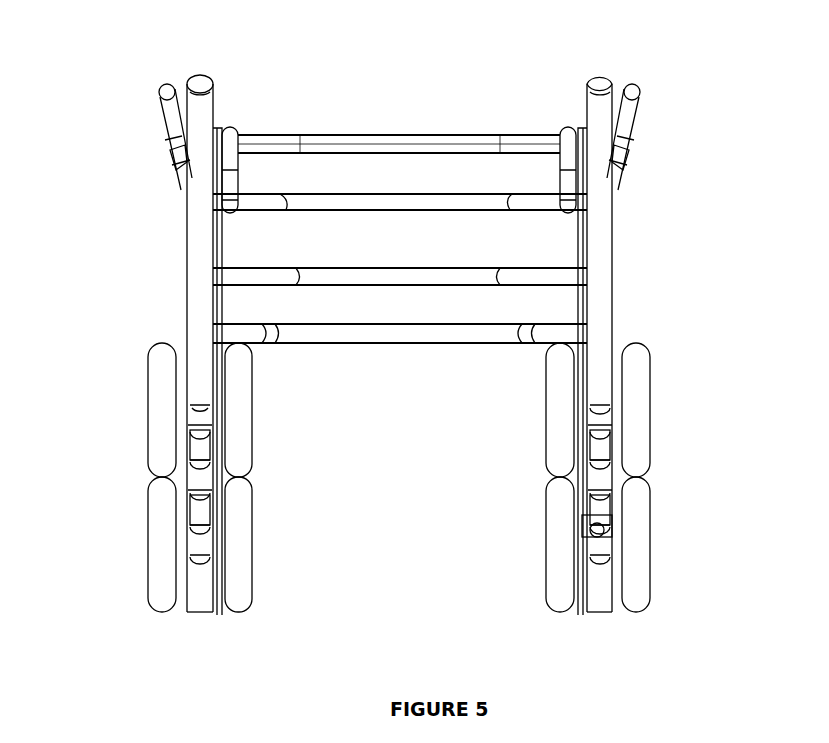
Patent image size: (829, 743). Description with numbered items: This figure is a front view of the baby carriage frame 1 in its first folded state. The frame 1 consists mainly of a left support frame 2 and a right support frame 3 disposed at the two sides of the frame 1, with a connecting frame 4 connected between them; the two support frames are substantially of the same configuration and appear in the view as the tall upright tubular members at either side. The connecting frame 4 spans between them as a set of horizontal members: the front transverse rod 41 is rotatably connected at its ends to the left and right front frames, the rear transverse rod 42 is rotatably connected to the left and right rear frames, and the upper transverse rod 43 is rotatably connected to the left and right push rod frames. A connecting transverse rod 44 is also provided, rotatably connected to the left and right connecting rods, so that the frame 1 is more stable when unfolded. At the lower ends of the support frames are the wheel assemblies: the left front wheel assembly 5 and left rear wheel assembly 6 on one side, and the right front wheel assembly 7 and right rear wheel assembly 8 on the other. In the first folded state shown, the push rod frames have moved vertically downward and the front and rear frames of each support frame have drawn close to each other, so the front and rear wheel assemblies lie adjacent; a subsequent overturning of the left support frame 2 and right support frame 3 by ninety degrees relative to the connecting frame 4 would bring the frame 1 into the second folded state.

The frame 1 is at (112, 77).
The left support frame 2 is at (613, 242).
The right support frame 3 is at (184, 242).
The connecting frame 4 is at (399, 87).
The front transverse rod 41 is at (350, 280).
The rear transverse rod 42 is at (450, 330).
The upper transverse rod 43 is at (453, 200).
The connecting transverse rod 44 is at (360, 135).
The left front wheel assembly 5 is at (654, 403).
The left rear wheel assembly 6 is at (653, 540).
The right front wheel assembly 7 is at (146, 407).
The right rear wheel assembly 8 is at (147, 542).